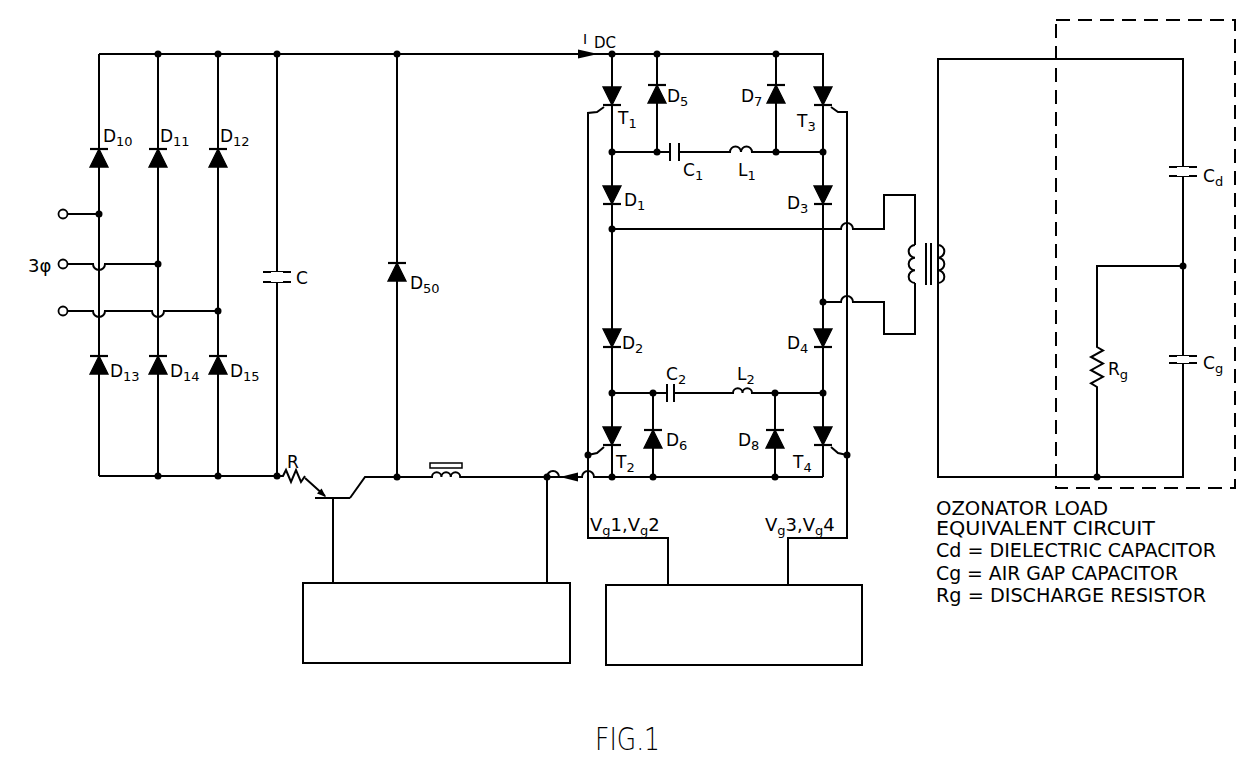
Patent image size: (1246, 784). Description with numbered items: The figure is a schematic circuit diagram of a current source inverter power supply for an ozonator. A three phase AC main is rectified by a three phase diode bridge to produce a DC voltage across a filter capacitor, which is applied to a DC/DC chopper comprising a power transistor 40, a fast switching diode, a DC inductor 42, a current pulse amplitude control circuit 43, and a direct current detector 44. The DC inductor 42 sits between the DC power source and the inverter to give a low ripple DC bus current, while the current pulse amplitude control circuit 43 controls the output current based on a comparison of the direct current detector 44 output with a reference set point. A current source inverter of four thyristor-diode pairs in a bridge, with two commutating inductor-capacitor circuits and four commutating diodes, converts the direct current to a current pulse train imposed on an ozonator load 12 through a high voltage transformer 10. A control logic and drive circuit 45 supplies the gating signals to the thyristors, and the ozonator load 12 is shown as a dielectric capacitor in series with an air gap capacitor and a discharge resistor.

The high voltage transformer 10 is at (925, 244).
The ozonator load 12 is at (1183, 443).
The power transistor 40 is at (360, 480).
The DC inductor 42 is at (448, 462).
The current pulse amplitude control circuit 43 is at (303, 631).
The direct current detector 44 is at (547, 472).
The control logic and drive circuit 45 is at (862, 645).